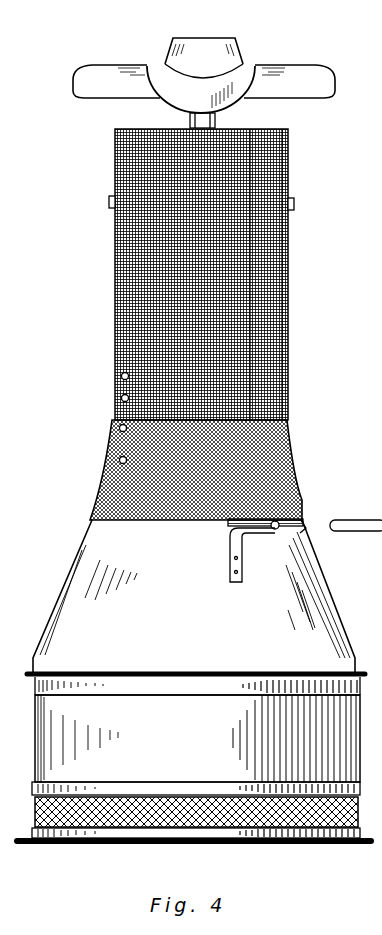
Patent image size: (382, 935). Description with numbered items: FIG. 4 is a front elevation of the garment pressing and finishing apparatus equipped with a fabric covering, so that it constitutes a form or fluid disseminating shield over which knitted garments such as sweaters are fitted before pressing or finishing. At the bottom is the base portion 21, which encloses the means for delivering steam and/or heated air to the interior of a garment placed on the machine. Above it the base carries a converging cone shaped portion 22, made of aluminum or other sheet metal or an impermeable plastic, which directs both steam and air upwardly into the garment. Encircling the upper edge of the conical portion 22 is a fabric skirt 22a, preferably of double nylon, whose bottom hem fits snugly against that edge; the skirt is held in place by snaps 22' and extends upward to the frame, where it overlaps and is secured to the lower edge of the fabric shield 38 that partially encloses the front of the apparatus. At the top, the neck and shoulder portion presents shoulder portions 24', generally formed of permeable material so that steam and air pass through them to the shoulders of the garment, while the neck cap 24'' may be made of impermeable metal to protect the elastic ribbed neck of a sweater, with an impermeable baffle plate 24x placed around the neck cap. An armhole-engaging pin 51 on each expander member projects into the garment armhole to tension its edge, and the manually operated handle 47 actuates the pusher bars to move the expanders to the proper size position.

The shoulder portions 24' is at (209, 67).
The neck cap 24'' is at (204, 35).
The baffle plate 24x is at (242, 75).
The fabric shield 38 is at (226, 330).
The armhole-engaging pin 51 is at (109, 202).
The snaps 22' is at (100, 418).
The fabric skirt 22a is at (299, 485).
The handle 47 is at (276, 532).
The cone shaped portion 22 is at (196, 607).
The base portion 21 is at (35, 716).